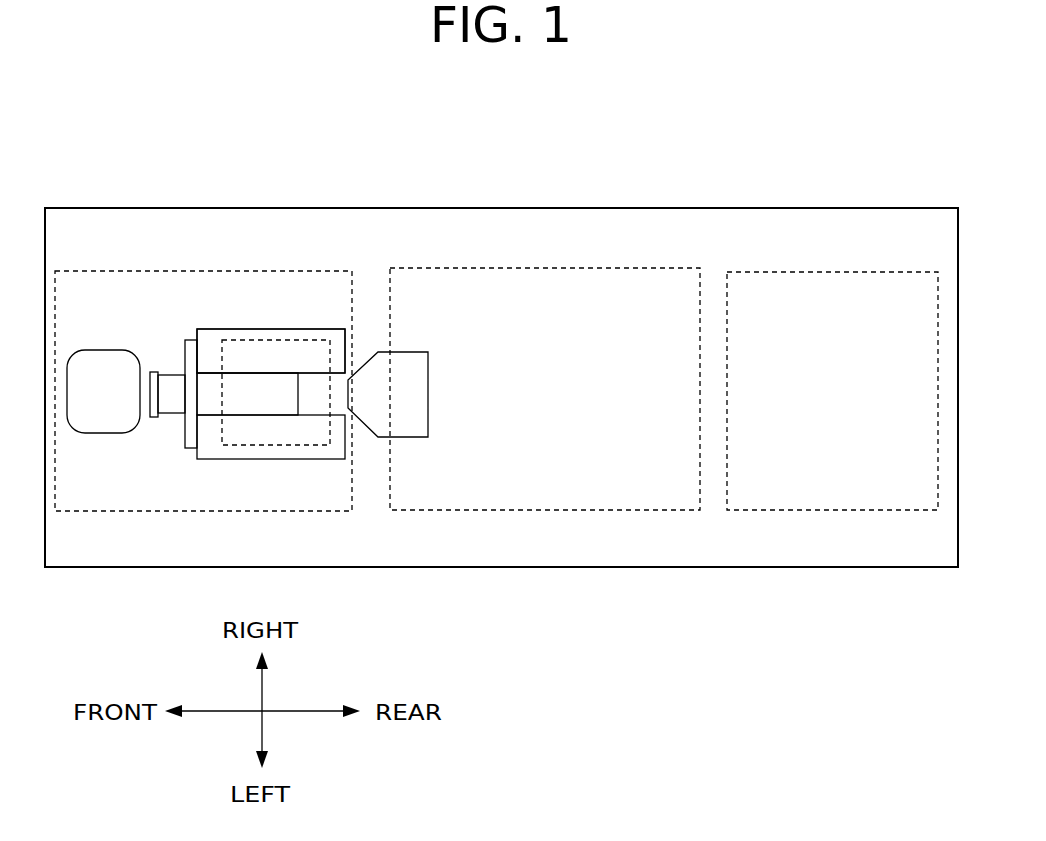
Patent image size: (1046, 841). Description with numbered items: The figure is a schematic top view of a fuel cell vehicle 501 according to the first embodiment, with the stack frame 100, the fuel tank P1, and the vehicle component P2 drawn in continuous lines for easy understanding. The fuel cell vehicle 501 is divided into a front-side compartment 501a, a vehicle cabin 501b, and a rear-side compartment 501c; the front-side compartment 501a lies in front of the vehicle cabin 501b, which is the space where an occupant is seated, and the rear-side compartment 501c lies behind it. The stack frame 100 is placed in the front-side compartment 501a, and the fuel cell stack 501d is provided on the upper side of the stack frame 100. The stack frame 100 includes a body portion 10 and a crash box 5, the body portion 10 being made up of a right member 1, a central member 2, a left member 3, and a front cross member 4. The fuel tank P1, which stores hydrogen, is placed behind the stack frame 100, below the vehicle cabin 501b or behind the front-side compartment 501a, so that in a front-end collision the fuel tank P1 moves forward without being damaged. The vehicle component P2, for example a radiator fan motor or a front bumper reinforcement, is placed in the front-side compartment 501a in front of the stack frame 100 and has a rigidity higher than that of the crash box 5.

The fuel cell vehicle 501 is at (877, 146).
The front-side compartment 501a is at (193, 270).
The vehicle cabin 501b is at (462, 268).
The rear-side compartment 501c is at (768, 272).
The fuel cell stack 501d is at (313, 450).
The fuel tank P1 is at (412, 352).
The vehicle component P2 is at (102, 350).
The right member 1 is at (232, 329).
The central member 2 is at (247, 394).
The left member 3 is at (247, 459).
The front cross member 4 is at (188, 340).
The crash box 5 is at (168, 413).
The body portion 10 is at (270, 329).
The stack frame 100 is at (271, 392).